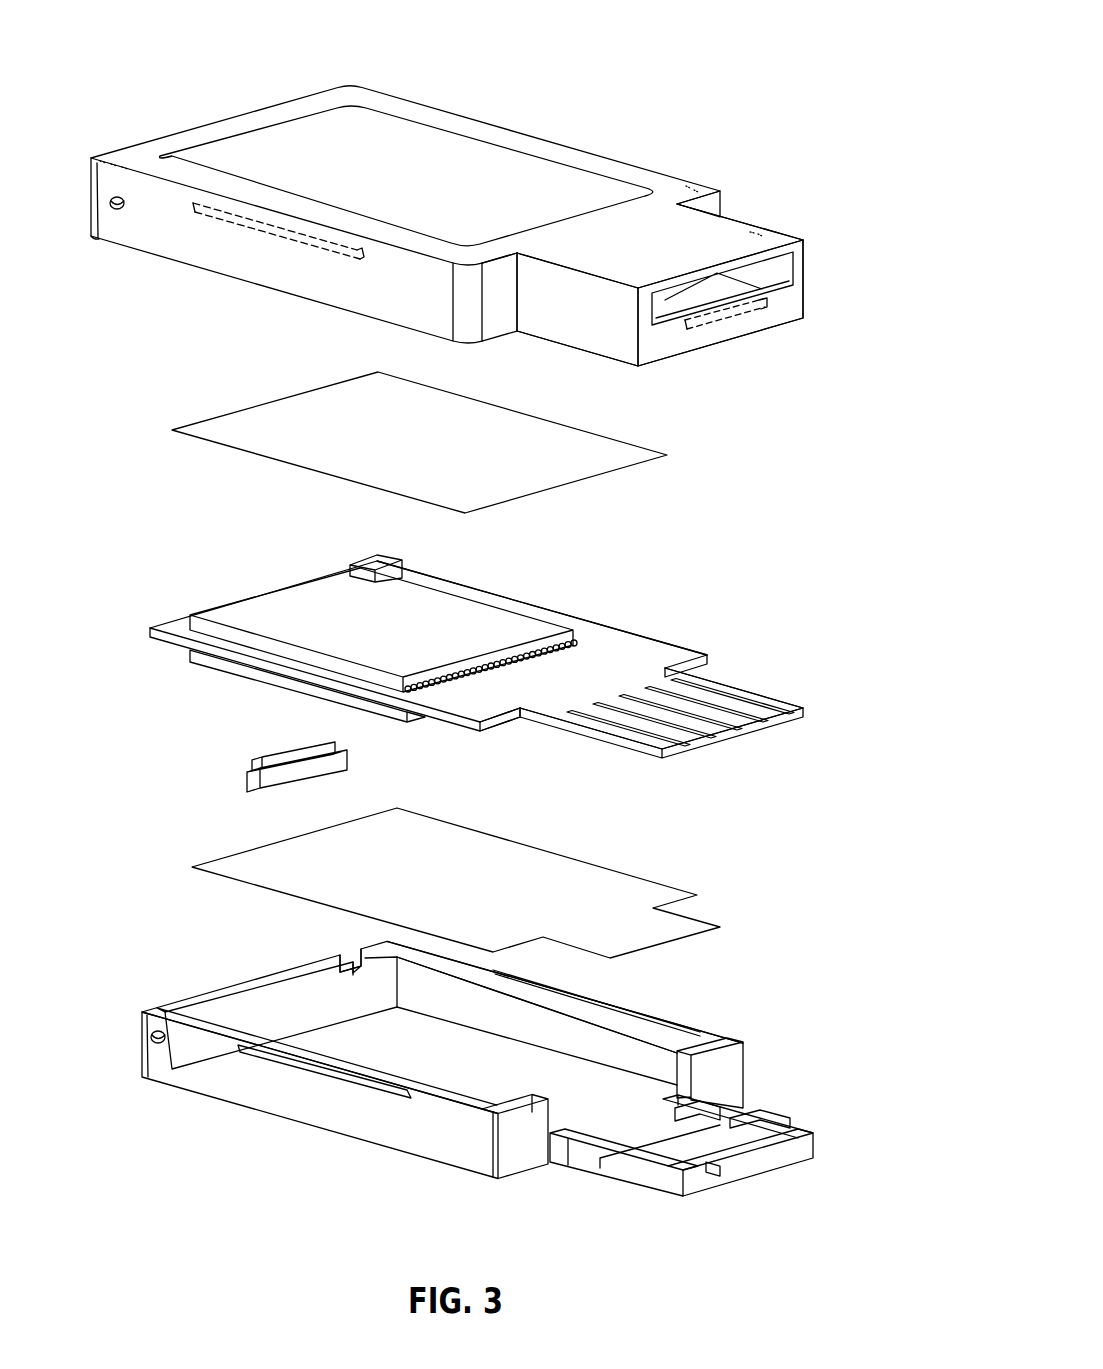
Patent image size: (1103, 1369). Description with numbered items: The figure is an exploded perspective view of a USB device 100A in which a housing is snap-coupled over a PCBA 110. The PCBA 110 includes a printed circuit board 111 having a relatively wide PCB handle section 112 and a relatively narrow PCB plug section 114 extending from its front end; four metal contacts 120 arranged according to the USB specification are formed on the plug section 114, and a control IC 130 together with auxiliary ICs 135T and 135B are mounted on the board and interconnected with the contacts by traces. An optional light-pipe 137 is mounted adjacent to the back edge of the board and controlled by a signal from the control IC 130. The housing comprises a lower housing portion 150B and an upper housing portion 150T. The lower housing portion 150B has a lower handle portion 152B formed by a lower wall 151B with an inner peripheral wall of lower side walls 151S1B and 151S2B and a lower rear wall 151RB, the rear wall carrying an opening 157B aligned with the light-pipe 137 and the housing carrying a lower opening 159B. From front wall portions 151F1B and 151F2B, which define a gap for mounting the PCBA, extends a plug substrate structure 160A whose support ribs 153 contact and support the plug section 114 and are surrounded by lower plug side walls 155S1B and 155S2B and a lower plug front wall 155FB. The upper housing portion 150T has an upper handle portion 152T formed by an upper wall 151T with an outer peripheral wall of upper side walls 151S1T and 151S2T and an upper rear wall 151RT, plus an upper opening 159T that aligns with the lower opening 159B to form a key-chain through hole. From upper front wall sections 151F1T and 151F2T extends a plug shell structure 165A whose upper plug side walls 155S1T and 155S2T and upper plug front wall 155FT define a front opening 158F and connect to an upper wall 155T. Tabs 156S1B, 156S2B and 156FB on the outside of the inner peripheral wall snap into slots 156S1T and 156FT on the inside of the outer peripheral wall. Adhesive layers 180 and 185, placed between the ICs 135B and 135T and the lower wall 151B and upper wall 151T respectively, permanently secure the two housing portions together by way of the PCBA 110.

The USB device 100A is at (715, 65).
The PCBA 110 is at (458, 673).
The printed circuit board 111 is at (183, 622).
The PCB handle section 112 is at (642, 633).
The PCB plug section 114 is at (725, 676).
The metal contacts 120 is at (733, 715).
The control integrated circuit 130 is at (540, 728).
The IC 135T is at (440, 605).
The IC 135B is at (250, 678).
The light-pipe 137 is at (270, 750).
The upper housing portion 150T is at (453, 219).
The lower housing portion 150B is at (482, 1082).
The upper wall 151T is at (327, 98).
The lower wall 151B is at (490, 1082).
The upper rear wall 151RT is at (112, 158).
The lower rear wall 151RB is at (180, 1002).
The upper side wall 151S1T is at (308, 282).
The lower side wall 151S1B is at (468, 1150).
The upper side wall 151S2T is at (707, 185).
The lower side wall 151S2B is at (663, 1040).
The upper front wall section 151F1T is at (492, 290).
The front wall portion 151F1B is at (526, 1140).
The upper front wall section 151F2T is at (723, 207).
The front wall portion 151F2B is at (720, 1085).
The upper handle portion 152T is at (562, 138).
The lower handle portion 152B is at (700, 1025).
The support ribs 153 is at (713, 1143).
The upper wall 155T is at (687, 287).
The upper plug side wall 155S1T is at (588, 335).
The upper plug side wall 155S2T is at (765, 240).
The upper plug front wall 155FT is at (787, 312).
The lower plug side wall 155S1B is at (650, 1170).
The lower plug side wall 155S2B is at (773, 1122).
The lower plug front wall 155FB is at (697, 1178).
The slot 156S1T is at (247, 228).
The slot 156FT is at (726, 325).
The tab 156S1B is at (320, 1072).
The tab 156S2B is at (610, 1003).
The tab 156FB is at (768, 1160).
The opening 157B is at (362, 957).
The front opening 158F is at (782, 270).
The upper opening 159T is at (118, 230).
The lower opening 159B is at (164, 1050).
The plug substrate structure 160A is at (710, 1160).
The plug shell structure 165A is at (625, 365).
The adhesive layer 180 is at (245, 852).
The adhesive layer 185 is at (240, 410).